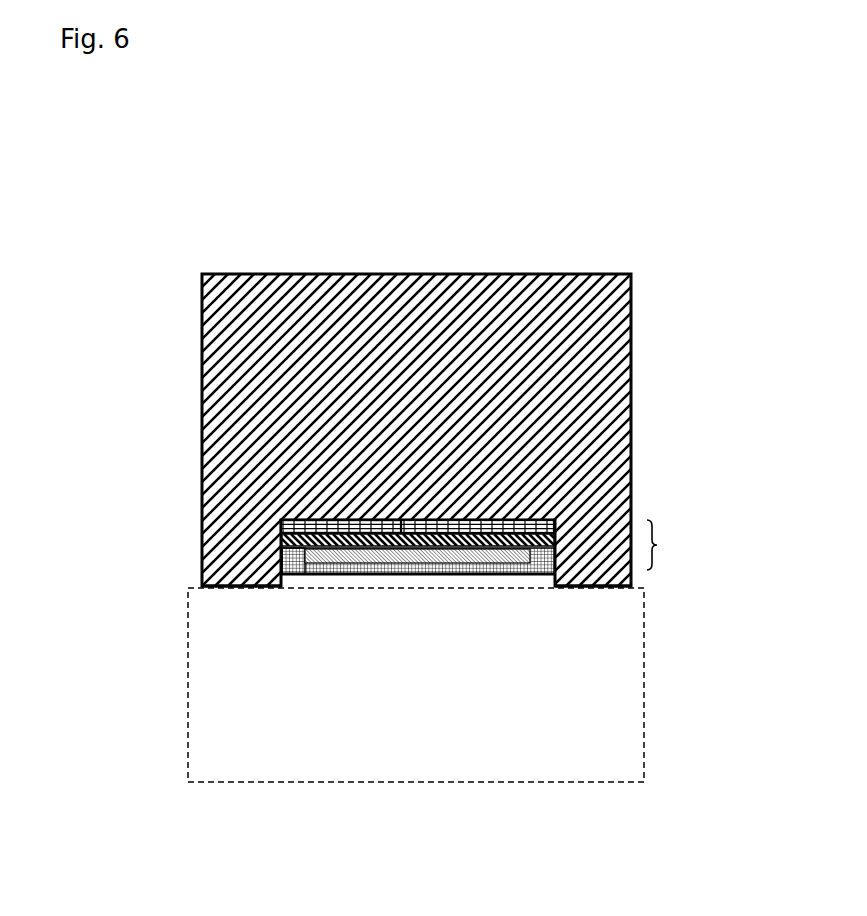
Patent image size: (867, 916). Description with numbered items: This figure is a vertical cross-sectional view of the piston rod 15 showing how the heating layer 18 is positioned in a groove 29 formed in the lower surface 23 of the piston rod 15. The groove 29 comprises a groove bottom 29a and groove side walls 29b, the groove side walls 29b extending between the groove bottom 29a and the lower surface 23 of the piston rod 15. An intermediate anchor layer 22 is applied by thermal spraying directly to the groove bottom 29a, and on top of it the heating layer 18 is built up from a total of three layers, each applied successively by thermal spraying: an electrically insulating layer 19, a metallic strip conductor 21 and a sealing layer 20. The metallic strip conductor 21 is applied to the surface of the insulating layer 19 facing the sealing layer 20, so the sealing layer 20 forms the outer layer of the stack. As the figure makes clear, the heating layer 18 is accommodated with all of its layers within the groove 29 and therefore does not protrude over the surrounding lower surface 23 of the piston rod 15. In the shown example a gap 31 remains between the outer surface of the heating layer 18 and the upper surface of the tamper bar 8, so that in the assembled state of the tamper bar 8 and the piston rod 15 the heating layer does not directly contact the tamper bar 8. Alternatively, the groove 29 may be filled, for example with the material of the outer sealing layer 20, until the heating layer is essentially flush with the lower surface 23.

The piston rod 15 is at (252, 380).
The intermediate anchor layer 22 is at (550, 518).
The groove bottom 29a is at (298, 524).
The electrically insulating layer 19 is at (555, 531).
The groove 29 is at (322, 578).
The groove side walls 29b is at (283, 560).
The gap 31 is at (393, 578).
The sealing layer 20 is at (467, 574).
The metallic strip conductor 21 is at (568, 584).
The lower surface 23 is at (237, 587).
The heating layer 18 is at (676, 545).
The tamper bar 8 is at (318, 726).